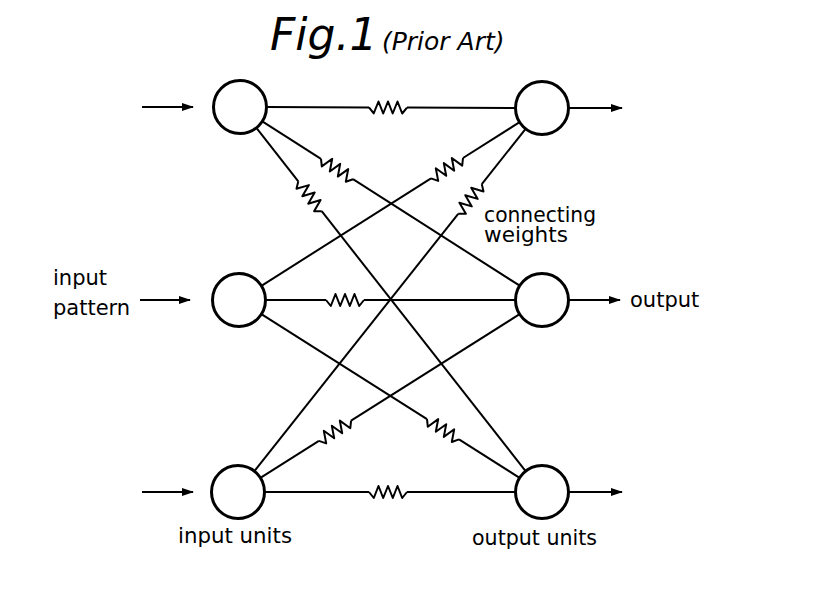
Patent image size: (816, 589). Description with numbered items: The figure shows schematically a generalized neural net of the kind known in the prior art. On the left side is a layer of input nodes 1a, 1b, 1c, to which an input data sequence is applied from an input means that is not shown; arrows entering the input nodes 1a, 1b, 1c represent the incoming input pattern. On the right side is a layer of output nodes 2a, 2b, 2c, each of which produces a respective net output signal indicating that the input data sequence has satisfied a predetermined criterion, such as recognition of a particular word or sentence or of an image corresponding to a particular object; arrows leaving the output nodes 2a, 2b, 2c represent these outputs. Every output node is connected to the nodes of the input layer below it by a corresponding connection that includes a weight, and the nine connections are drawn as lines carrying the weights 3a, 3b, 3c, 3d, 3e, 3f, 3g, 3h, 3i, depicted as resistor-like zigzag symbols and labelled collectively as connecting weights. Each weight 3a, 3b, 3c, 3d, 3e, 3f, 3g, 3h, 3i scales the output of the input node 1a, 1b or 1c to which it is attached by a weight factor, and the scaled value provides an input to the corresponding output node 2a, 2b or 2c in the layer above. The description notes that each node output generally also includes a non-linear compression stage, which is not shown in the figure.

The input node 1a is at (238, 492).
The input node 1b is at (239, 300).
The input node 1c is at (240, 107).
The output node 2a is at (542, 492).
The output node 2b is at (542, 300).
The output node 2c is at (542, 108).
The weight 3a is at (390, 506).
The weight 3b is at (389, 396).
The weight 3c is at (389, 300).
The weight 3d is at (390, 396).
The weight 3e is at (391, 313).
The weight 3f is at (390, 204).
The weight 3g is at (390, 299).
The weight 3h is at (390, 203).
The weight 3i is at (391, 93).